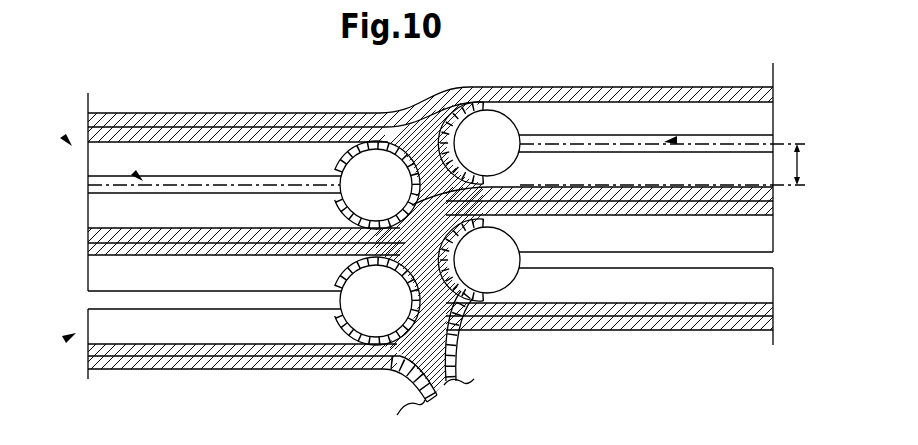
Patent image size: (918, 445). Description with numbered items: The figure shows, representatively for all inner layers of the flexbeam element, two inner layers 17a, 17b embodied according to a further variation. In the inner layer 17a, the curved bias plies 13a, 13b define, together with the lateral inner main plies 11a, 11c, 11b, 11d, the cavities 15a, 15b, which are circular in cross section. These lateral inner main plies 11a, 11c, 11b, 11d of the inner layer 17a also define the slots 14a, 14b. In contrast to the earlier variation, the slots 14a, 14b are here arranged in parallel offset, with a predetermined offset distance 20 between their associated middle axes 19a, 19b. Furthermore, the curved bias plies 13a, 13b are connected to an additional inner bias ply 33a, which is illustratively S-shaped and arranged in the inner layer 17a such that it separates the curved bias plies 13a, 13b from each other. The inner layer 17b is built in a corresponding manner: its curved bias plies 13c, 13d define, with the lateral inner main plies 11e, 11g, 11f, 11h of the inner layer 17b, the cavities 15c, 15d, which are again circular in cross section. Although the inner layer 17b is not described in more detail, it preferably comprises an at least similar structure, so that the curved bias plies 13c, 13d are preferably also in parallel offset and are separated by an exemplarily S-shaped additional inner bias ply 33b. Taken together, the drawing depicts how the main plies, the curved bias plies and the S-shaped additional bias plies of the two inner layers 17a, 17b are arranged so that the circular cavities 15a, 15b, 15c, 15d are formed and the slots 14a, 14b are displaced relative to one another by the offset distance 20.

The lateral inner main ply 11a is at (168, 158).
The lateral inner main ply 11b is at (601, 120).
The lateral inner main ply 11c is at (98, 212).
The lateral inner main ply 11d is at (748, 165).
The lateral inner main ply 11e is at (100, 272).
The lateral inner main ply 11f is at (760, 234).
The lateral inner main ply 11g is at (163, 333).
The lateral inner main ply 11h is at (743, 292).
The curved bias ply 13a is at (325, 152).
The curved bias ply 13b is at (528, 117).
The curved bias ply 13c is at (305, 349).
The curved bias ply 13d is at (548, 294).
The slot 14a is at (136, 174).
The slot 14b is at (672, 139).
The cavity 15a is at (376, 185).
The cavity 15b is at (487, 143).
The cavity 15c is at (376, 301).
The cavity 15d is at (487, 260).
The inner layer 17a is at (66, 139).
The inner layer 17b is at (66, 339).
The middle axis 19a is at (208, 185).
The middle axis 19b is at (616, 144).
The offset distance 20 is at (813, 164).
The additional inner bias ply 33a is at (578, 190).
The additional inner bias ply 33b is at (650, 297).